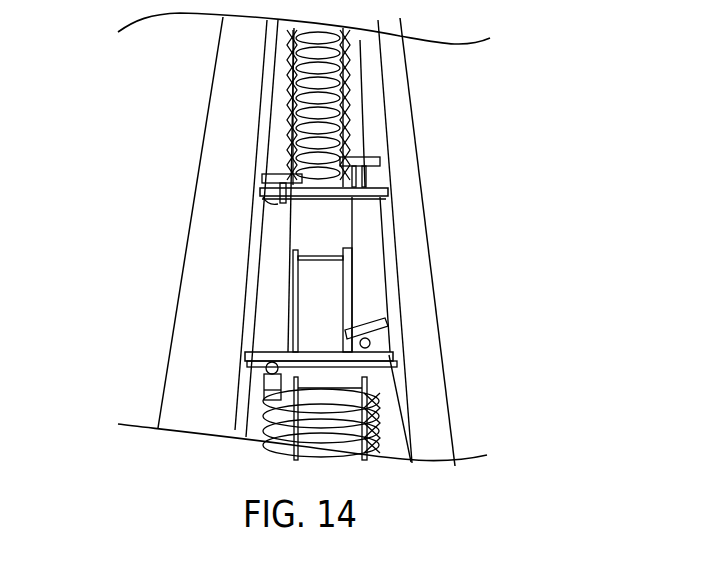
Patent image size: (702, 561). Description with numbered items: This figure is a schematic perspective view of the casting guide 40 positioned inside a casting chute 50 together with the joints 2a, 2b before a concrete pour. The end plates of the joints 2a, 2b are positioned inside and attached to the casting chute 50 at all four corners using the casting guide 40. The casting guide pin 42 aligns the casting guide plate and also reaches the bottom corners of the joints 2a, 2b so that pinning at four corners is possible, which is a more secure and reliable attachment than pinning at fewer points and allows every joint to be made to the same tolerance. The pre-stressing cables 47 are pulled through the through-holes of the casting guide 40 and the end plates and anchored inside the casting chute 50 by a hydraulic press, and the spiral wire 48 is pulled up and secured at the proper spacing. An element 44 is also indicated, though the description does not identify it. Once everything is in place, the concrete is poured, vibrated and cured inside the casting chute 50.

The joint 2a is at (388, 186).
The joint 2b is at (398, 366).
The casting guide 40 is at (434, 228).
The casting guide pin 42 is at (260, 206).
The lever 44 is at (368, 322).
The pre-stressing cables 47 is at (380, 380).
The spiral wire 48 is at (346, 118).
The casting chute 50 is at (198, 286).